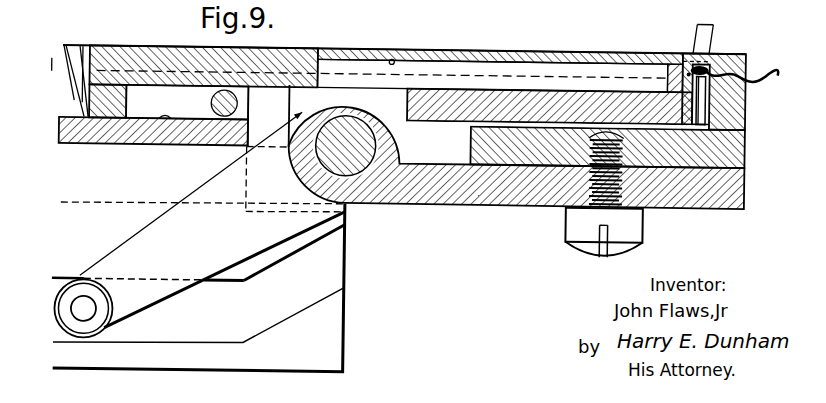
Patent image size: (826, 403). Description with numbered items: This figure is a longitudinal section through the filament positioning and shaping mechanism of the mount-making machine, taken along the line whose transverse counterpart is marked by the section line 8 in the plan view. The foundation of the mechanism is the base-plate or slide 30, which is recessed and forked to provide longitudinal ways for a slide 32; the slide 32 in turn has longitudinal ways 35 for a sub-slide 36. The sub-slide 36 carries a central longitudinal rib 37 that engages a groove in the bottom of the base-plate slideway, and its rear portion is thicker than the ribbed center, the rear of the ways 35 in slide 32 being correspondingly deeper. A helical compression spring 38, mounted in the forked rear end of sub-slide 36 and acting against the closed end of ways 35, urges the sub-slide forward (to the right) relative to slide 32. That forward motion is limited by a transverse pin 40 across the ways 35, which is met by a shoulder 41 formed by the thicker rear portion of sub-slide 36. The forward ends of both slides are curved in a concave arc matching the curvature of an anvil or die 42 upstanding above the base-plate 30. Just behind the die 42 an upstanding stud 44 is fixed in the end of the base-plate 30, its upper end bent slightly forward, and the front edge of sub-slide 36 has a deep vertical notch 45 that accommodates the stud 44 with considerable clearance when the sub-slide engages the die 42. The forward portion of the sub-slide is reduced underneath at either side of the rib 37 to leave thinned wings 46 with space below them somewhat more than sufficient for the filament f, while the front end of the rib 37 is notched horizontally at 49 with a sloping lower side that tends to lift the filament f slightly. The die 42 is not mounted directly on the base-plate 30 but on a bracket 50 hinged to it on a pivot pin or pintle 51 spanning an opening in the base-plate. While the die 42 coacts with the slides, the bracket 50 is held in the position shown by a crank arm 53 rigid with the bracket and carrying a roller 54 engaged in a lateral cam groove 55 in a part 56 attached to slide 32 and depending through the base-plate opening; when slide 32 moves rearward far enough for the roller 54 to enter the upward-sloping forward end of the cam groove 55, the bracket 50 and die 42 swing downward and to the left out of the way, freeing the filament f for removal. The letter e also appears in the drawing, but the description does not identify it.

The section line 8— 8 is at (703, 0).
The base-plate or slide 30 is at (290, 107).
The slide 32 is at (97, 146).
The longitudinal ways 35 is at (166, 117).
The sub-slide 36 is at (527, 44).
The longitudinal rib 37 is at (434, 117).
The helical compression spring 38 is at (98, 51).
The transverse pin 40 is at (212, 101).
The shoulder 41 is at (127, 110).
The anvil or die 42 is at (747, 48).
The stud 44 is at (712, 106).
The vertical notch 45 is at (685, 46).
The wings 46 is at (392, 55).
The notch 49 is at (710, 53).
The bracket 50 is at (385, 200).
The pivot pin or pintle 51 is at (316, 162).
The crank arm 53 is at (153, 224).
The roller 54 is at (65, 277).
The cam groove 55 is at (280, 322).
The part 56 is at (350, 334).
The wire e is at (741, 83).
The filament f is at (700, 51).